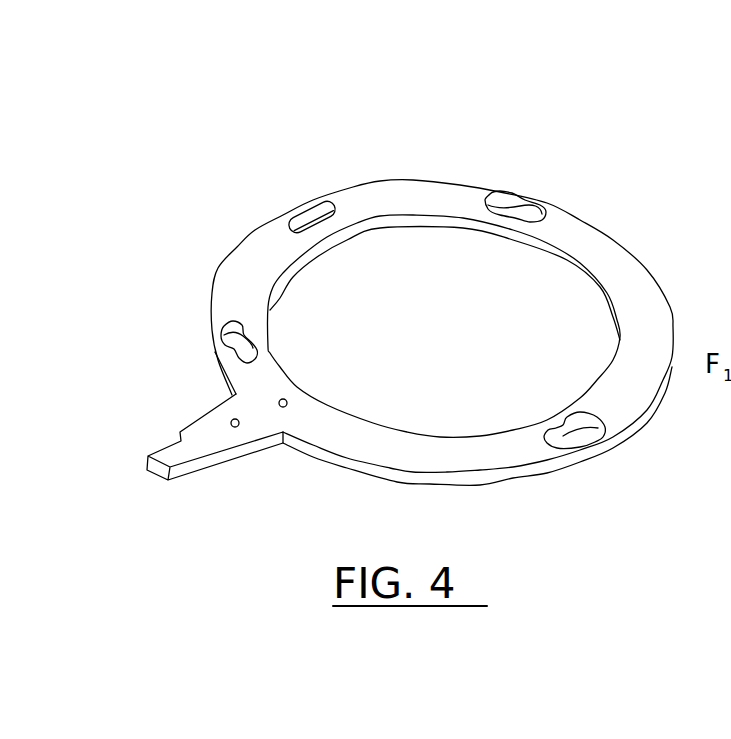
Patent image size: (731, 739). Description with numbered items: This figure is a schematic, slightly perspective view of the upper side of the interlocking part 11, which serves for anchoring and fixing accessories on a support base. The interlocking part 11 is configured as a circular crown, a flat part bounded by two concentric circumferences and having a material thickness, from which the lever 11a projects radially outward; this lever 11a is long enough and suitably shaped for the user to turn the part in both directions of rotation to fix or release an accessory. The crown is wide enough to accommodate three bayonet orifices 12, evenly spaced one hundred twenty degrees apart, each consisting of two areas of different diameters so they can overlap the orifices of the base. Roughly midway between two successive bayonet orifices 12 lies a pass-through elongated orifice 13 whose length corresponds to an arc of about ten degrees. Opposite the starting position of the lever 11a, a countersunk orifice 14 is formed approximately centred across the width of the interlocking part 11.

The interlocking part 11 is at (632, 303).
The lever 11a is at (200, 442).
The bayonet orifices 12 is at (510, 207).
The pass-through elongated orifice 13 is at (307, 217).
The countersunk orifice 14 is at (282, 396).